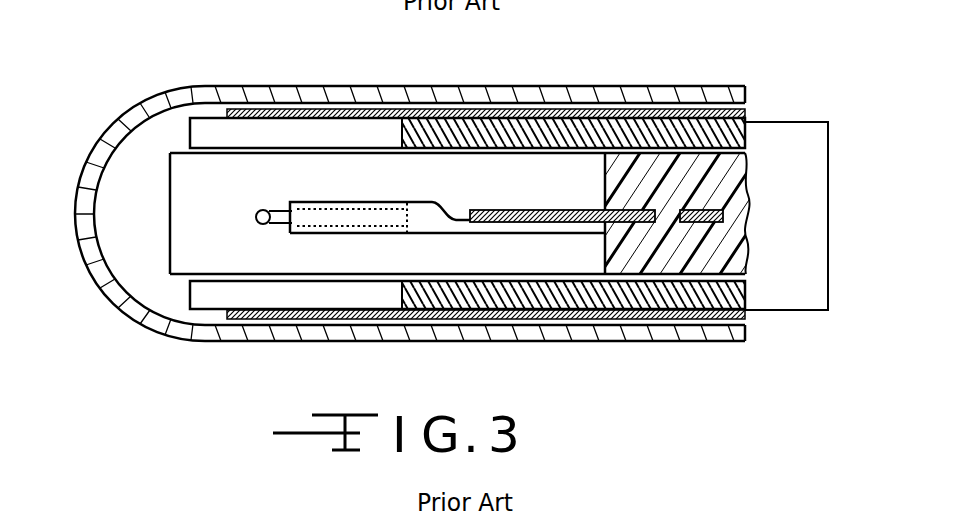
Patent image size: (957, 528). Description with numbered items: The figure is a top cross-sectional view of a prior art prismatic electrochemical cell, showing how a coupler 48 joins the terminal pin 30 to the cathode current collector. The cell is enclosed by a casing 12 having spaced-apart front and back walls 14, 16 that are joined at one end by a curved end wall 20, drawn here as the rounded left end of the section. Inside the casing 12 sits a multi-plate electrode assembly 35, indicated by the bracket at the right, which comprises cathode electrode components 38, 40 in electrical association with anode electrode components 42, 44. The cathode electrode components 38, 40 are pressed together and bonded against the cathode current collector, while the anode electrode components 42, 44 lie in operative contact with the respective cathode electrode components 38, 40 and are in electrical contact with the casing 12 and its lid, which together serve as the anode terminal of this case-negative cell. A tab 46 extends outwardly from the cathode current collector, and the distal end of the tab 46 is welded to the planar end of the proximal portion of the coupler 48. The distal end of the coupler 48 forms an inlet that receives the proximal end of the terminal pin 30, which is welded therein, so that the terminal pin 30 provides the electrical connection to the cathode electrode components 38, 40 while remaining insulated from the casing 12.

The casing 12 is at (246, 342).
The front wall 14 is at (446, 338).
The back wall 16 is at (497, 86).
The curved end wall 20 is at (93, 148).
The terminal pin 30 is at (281, 207).
The multi-plate electrode assembly 35 is at (829, 213).
The cathode electrode component 38 is at (728, 177).
The cathode electrode component 40 is at (686, 233).
The anode electrode component 42 is at (668, 132).
The anode electrode component 44 is at (655, 296).
The tab 46 is at (534, 209).
The coupler 48 is at (428, 216).